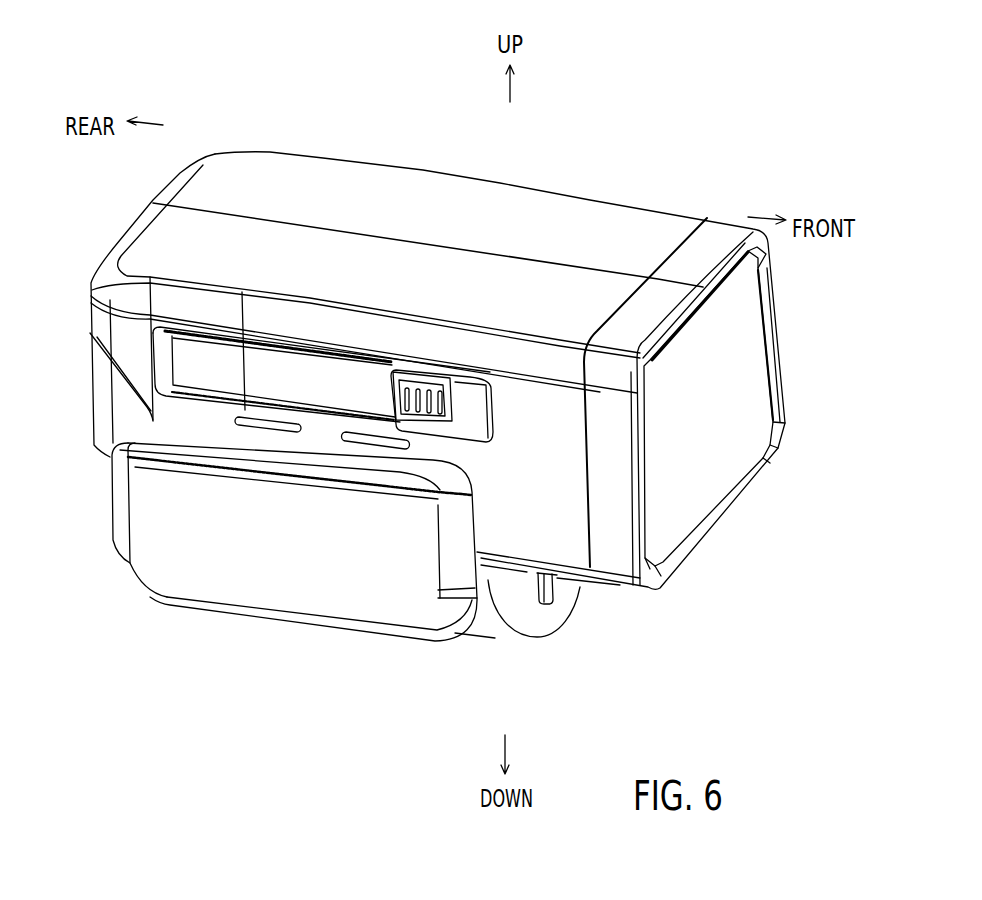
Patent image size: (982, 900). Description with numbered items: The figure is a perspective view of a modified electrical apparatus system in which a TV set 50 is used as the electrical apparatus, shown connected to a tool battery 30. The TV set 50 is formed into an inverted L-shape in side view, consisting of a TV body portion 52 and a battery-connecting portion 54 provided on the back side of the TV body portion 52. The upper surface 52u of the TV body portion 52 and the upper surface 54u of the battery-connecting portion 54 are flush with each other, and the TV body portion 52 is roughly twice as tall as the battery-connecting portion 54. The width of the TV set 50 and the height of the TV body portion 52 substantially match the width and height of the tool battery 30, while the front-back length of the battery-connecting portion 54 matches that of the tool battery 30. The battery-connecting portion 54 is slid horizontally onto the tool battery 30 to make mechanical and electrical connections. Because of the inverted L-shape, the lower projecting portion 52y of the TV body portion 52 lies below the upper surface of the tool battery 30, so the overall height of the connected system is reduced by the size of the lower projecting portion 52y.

The tool battery 30 is at (188, 545).
The TV set 50 is at (418, 160).
The TV body portion 52 is at (560, 480).
The upper surface of the TV body portion 52u is at (642, 237).
The lower projecting portion 52y is at (524, 535).
The battery-connecting portion 54 is at (275, 376).
The upper surface of the battery-connecting portion 54u is at (241, 248).